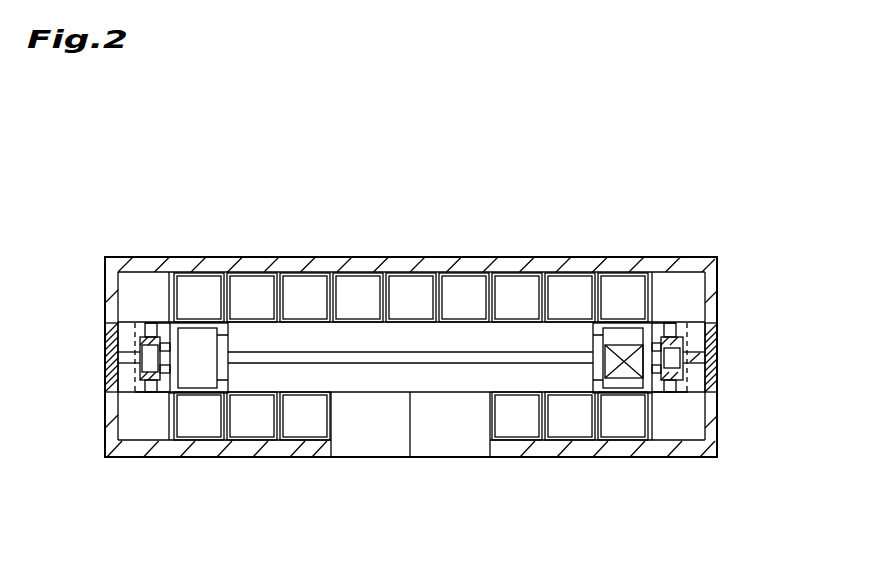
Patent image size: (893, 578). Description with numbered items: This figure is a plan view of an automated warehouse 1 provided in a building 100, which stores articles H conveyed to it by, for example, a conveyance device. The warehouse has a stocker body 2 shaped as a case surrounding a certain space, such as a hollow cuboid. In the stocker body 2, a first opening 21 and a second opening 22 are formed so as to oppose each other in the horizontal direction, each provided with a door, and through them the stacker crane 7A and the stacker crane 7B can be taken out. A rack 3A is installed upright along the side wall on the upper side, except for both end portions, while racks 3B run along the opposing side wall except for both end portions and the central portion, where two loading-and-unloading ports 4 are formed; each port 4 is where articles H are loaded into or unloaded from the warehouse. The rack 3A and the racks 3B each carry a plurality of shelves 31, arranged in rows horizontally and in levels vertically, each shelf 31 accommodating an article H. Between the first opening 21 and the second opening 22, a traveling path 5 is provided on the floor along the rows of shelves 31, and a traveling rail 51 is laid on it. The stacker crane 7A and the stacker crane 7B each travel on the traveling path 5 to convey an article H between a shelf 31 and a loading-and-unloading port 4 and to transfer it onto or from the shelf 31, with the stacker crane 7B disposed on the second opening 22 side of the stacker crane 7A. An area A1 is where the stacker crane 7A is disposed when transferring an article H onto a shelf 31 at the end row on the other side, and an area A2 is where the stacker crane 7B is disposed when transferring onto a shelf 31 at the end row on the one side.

The building 100 is at (780, 168).
The automated warehouse 1 is at (480, 242).
The stocker body 2 is at (692, 265).
The first opening 21 is at (105, 343).
The second opening 22 is at (717, 382).
The rack 3A is at (540, 268).
The rack 3B is at (262, 440).
The shelf 31 is at (357, 299).
The loading-and-unloading port 4 is at (384, 466).
The traveling path 5 is at (380, 379).
The traveling rail 51 is at (716, 350).
The stacker crane 7A is at (150, 402).
The stacker crane 7B is at (672, 405).
The area A1 is at (166, 321).
The area A2 is at (686, 322).
The article H is at (626, 378).